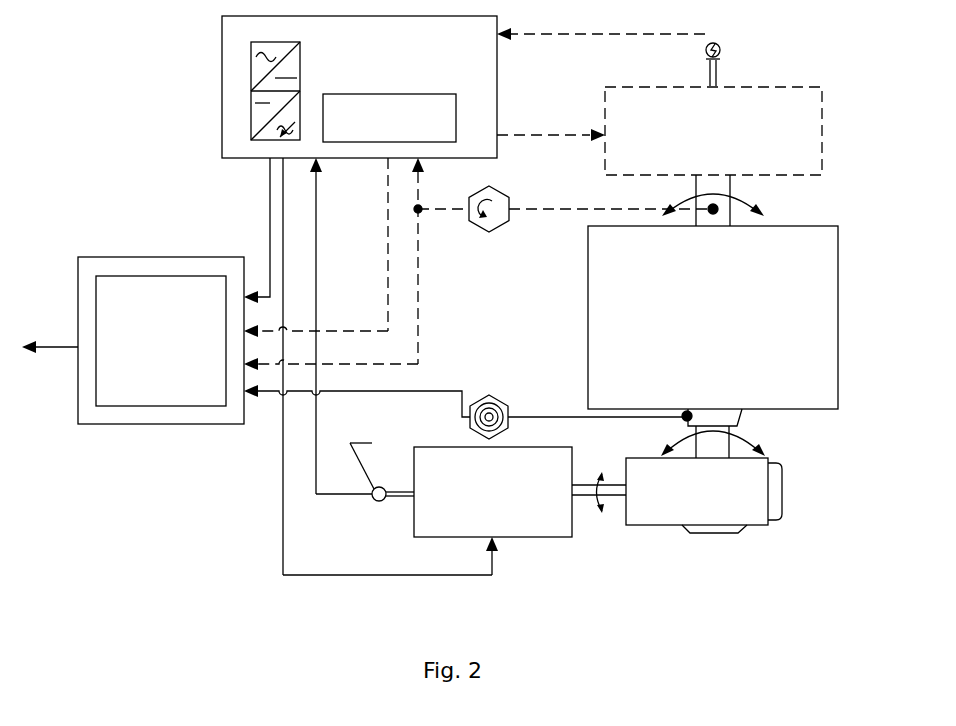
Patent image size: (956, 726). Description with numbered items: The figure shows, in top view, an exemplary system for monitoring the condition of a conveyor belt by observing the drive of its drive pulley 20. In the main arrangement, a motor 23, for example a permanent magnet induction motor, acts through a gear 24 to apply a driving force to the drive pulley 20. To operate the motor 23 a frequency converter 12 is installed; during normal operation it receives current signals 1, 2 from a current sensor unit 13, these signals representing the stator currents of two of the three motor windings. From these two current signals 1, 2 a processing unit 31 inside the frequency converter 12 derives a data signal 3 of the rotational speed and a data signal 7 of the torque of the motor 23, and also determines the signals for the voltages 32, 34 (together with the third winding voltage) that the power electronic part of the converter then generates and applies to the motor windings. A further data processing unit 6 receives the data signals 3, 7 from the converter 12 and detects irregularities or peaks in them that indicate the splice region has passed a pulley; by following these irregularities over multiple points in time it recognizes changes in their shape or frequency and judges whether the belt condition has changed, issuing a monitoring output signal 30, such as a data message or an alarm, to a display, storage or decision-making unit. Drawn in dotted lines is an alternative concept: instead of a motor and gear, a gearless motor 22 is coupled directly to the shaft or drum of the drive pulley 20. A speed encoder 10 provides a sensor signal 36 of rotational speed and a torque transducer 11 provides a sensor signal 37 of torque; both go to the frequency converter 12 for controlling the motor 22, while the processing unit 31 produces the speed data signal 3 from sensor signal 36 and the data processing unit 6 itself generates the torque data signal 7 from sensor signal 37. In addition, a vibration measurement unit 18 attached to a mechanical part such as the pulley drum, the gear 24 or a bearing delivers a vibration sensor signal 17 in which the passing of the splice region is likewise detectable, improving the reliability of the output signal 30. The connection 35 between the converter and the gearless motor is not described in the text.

The current signal 1 is at (332, 342).
The current signal 2 is at (365, 494).
The data signal of rotational speed 3 is at (316, 247).
The data processing unit 6 is at (168, 356).
The data signal of torque 7 is at (250, 230).
The speed encoder 10 is at (755, 52).
The torque transducer 11 is at (591, 221).
The frequency converter 12 is at (439, 60).
The current sensor unit 13 is at (384, 468).
The vibration sensor signal 17 is at (463, 387).
The vibration measurement unit 18 is at (503, 409).
The drive pulley 20 is at (729, 332).
The gearless motor 22 is at (729, 149).
The motor 23 is at (509, 511).
The gear 24 is at (713, 506).
The monitoring output signal 30 is at (50, 331).
The processing unit 31 is at (406, 131).
The voltage 32 is at (380, 382).
The voltage 34 is at (492, 556).
The control signal to yaw drive 35 is at (551, 148).
The sensor signal of rotational speed 36 is at (601, 48).
The sensor signal of torque 37 is at (441, 196).